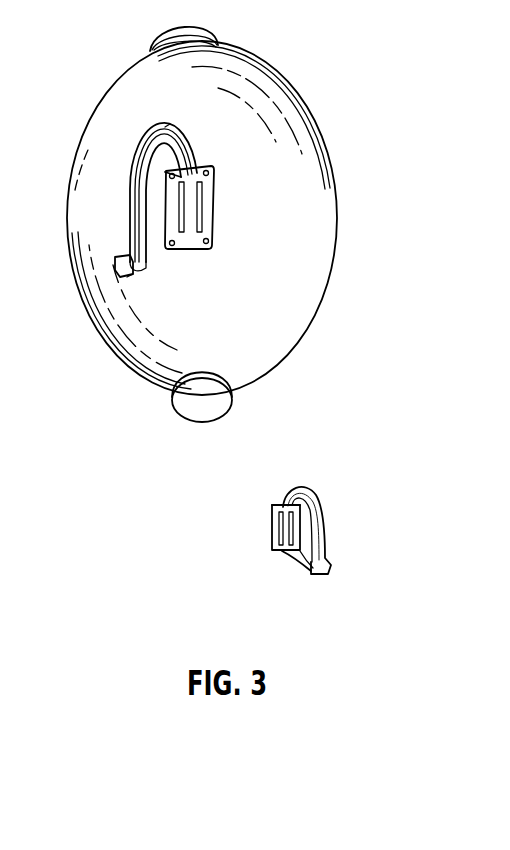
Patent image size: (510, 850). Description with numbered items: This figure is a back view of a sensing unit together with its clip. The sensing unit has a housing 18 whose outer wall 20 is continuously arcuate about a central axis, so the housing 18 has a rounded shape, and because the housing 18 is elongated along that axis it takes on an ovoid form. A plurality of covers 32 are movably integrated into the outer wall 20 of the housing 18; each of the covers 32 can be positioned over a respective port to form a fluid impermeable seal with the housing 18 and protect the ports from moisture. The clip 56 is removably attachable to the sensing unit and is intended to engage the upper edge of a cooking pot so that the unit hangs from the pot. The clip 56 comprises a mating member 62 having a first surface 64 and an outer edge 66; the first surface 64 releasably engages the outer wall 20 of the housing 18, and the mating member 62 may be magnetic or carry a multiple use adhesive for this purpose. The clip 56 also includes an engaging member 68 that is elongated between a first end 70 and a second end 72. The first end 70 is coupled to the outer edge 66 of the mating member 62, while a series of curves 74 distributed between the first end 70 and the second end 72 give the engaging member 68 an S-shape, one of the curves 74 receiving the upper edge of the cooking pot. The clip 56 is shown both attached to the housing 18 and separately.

The housing 18 is at (260, 58).
The outer wall 20 is at (287, 118).
The covers 32 is at (150, 50).
The clip 56 is at (196, 309).
The mating member 62 is at (214, 216).
The first surface 64 is at (295, 556).
The outer edge 66 is at (280, 505).
The engaging member 68 is at (133, 190).
The first end 70 is at (163, 174).
The second end 72 is at (113, 262).
The curves 74 is at (167, 127).